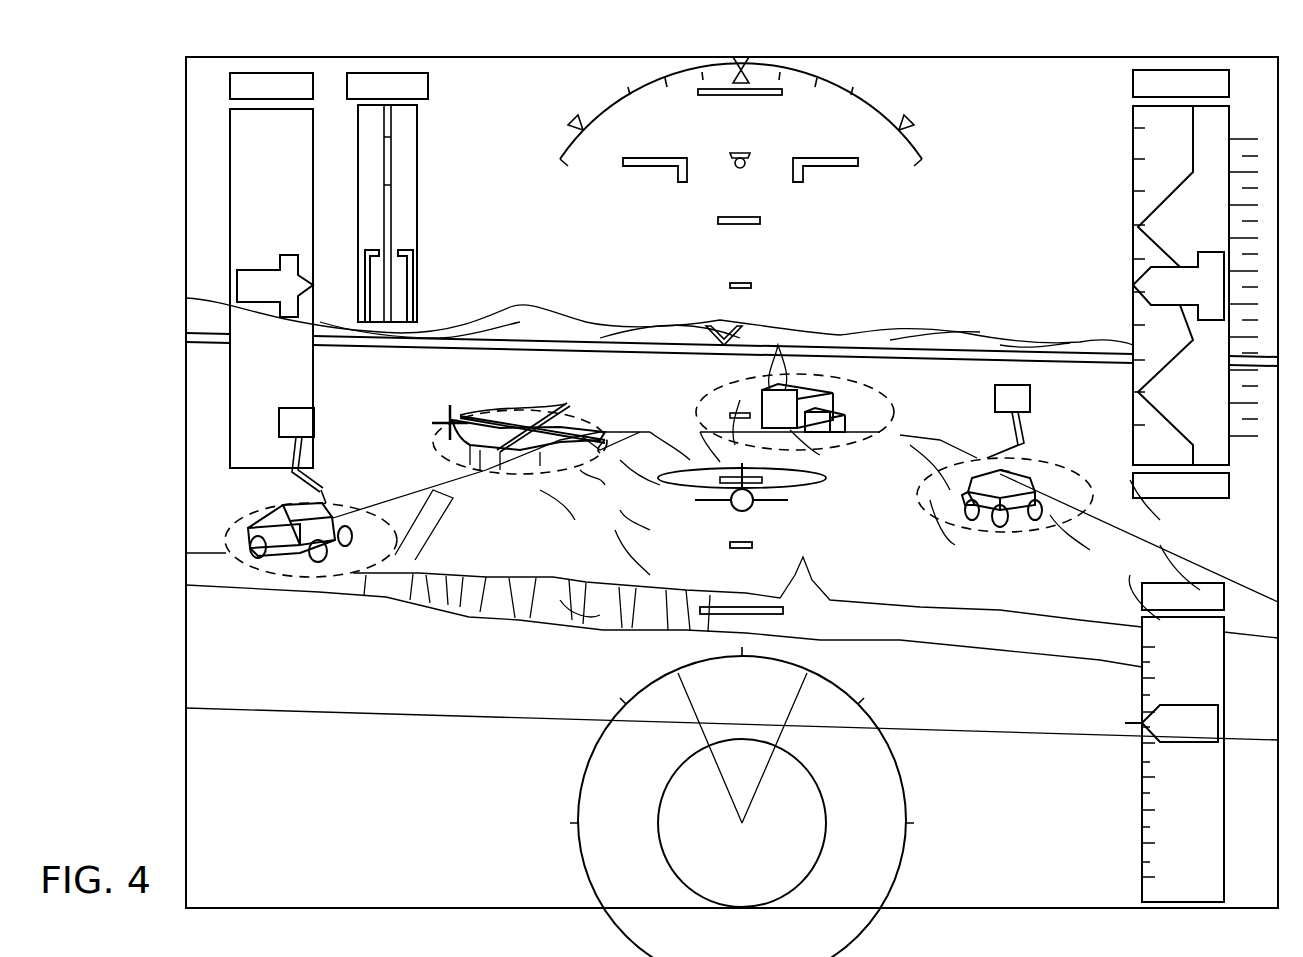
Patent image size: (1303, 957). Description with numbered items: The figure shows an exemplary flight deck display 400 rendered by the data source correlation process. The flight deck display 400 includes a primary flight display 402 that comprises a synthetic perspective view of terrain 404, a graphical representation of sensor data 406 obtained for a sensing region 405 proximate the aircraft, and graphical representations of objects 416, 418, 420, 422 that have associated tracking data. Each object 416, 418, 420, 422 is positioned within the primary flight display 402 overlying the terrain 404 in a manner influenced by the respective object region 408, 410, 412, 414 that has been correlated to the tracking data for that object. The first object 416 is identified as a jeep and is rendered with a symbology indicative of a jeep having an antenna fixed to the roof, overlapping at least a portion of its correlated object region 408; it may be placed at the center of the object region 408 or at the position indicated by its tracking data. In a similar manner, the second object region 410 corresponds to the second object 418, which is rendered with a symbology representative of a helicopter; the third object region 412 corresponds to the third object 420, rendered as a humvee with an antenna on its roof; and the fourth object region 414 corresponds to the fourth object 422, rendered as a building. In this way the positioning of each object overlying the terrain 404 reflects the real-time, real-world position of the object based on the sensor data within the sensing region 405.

The flight deck display 400 is at (1007, 56).
The primary flight display 402 is at (515, 112).
The terrain 404 is at (506, 847).
The sensing region 405 is at (343, 693).
The graphical representation of sensor data 406 is at (519, 691).
The object region 408 is at (294, 578).
The second object region 410 is at (520, 410).
The third object region 412 is at (1038, 457).
The fourth object region 414 is at (893, 405).
The first object 416 is at (339, 513).
The second object 418 is at (540, 447).
The third object 420 is at (935, 503).
The fourth object 422 is at (830, 425).